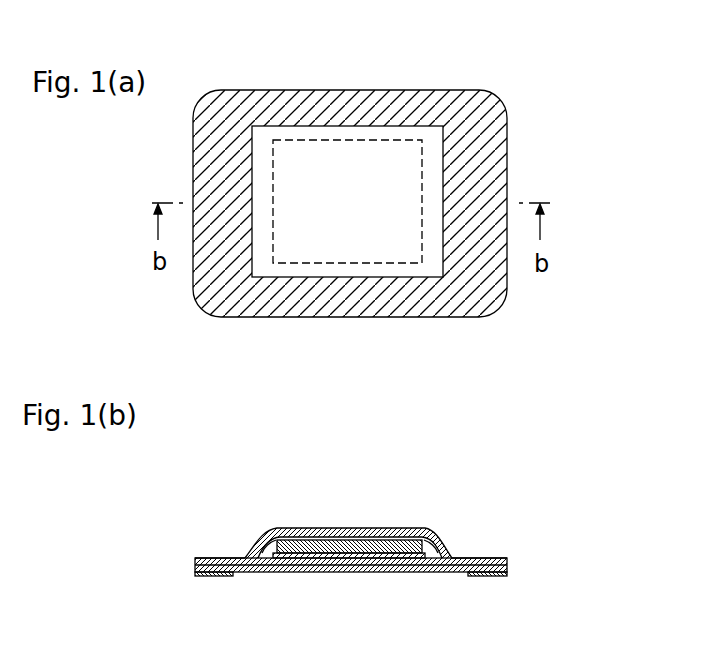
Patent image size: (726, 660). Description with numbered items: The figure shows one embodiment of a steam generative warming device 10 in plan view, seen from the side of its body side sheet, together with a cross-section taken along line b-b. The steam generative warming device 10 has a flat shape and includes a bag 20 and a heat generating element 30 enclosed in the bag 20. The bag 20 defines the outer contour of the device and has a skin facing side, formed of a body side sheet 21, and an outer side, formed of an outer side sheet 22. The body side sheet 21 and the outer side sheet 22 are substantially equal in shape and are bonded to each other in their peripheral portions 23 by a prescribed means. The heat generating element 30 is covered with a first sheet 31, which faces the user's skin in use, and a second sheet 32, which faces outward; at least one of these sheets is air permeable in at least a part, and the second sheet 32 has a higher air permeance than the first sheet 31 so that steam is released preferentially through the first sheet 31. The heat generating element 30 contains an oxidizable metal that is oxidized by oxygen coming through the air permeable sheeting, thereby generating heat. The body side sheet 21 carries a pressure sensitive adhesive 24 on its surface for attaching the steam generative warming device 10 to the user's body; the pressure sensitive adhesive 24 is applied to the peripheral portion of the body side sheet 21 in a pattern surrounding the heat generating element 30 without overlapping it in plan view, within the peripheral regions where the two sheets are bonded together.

In FIG. 1A, the steam generative warming device 10 is at (396, 200).
In FIG. 1B, the steam generative warming device 10 is at (372, 531).
In FIG. 1A, the bag 20 is at (507, 147).
In FIG. 1B, the bag 20 is at (321, 522).
In FIG. 1A, the body side sheet 21 is at (432, 143).
In FIG. 1B, the body side sheet 21 is at (347, 572).
In FIG. 1B, the outer side sheet 22 is at (265, 540).
In FIG. 1B, the peripheral portions 23 is at (215, 558).
In FIG. 1A, the pressure sensitive adhesive 24 is at (442, 302).
In FIG. 1B, the pressure sensitive adhesive 24 is at (222, 576).
In FIG. 1A, the heat generating element 30 is at (345, 240).
In FIG. 1B, the heat generating element 30 is at (365, 537).
In FIG. 1B, the first sheet 31 is at (425, 572).
In FIG. 1B, the second sheet 32 is at (442, 542).